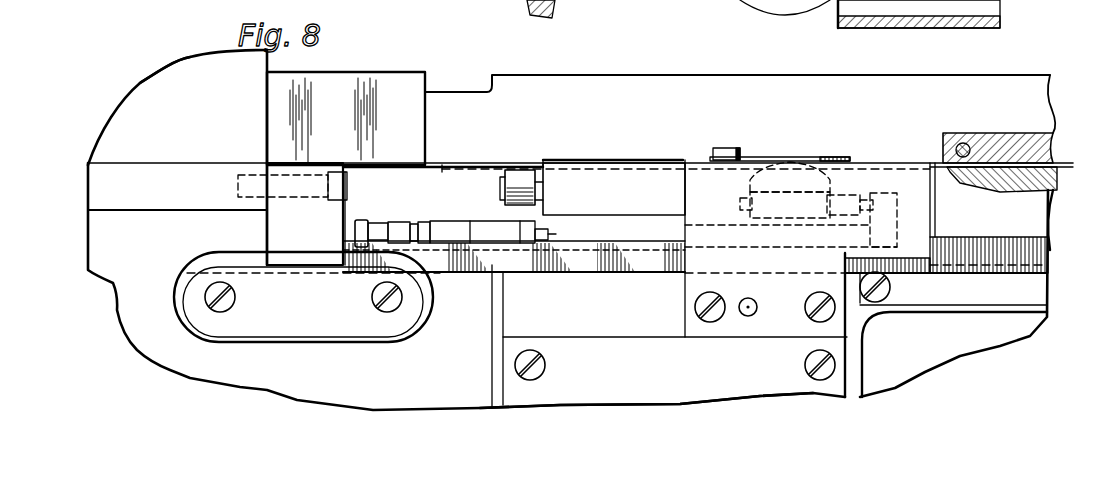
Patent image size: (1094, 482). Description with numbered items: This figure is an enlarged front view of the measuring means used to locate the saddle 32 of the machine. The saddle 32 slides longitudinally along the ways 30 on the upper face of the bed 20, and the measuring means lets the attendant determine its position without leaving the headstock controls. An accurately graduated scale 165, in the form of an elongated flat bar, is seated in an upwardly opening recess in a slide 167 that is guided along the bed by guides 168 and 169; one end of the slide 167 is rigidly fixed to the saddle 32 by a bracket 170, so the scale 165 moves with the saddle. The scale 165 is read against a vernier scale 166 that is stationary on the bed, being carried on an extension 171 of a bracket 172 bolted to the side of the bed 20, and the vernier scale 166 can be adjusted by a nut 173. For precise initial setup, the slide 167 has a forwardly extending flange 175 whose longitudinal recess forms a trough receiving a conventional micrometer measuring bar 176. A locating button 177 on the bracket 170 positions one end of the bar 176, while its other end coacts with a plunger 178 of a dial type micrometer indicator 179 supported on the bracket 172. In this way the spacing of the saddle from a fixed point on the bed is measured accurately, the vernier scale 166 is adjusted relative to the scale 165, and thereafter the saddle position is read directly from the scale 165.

The bed 20 is at (117, 292).
The ways 30 is at (388, 73).
The saddle 32 is at (163, 70).
The scale 165 is at (1066, 138).
The vernier scale 166 is at (621, 160).
The slide 167 is at (1037, 227).
The guide 168 is at (334, 325).
The guide 169 is at (1000, 133).
The bracket 170 is at (275, 231).
The extension 171 is at (662, 175).
The bracket 172 is at (742, 393).
The nut 173 is at (520, 170).
The flange 175 is at (392, 232).
The micrometer measuring bar 176 is at (453, 223).
The locating button 177 is at (355, 228).
The plunger 178 is at (596, 224).
The micrometer indicator 179 is at (750, 192).